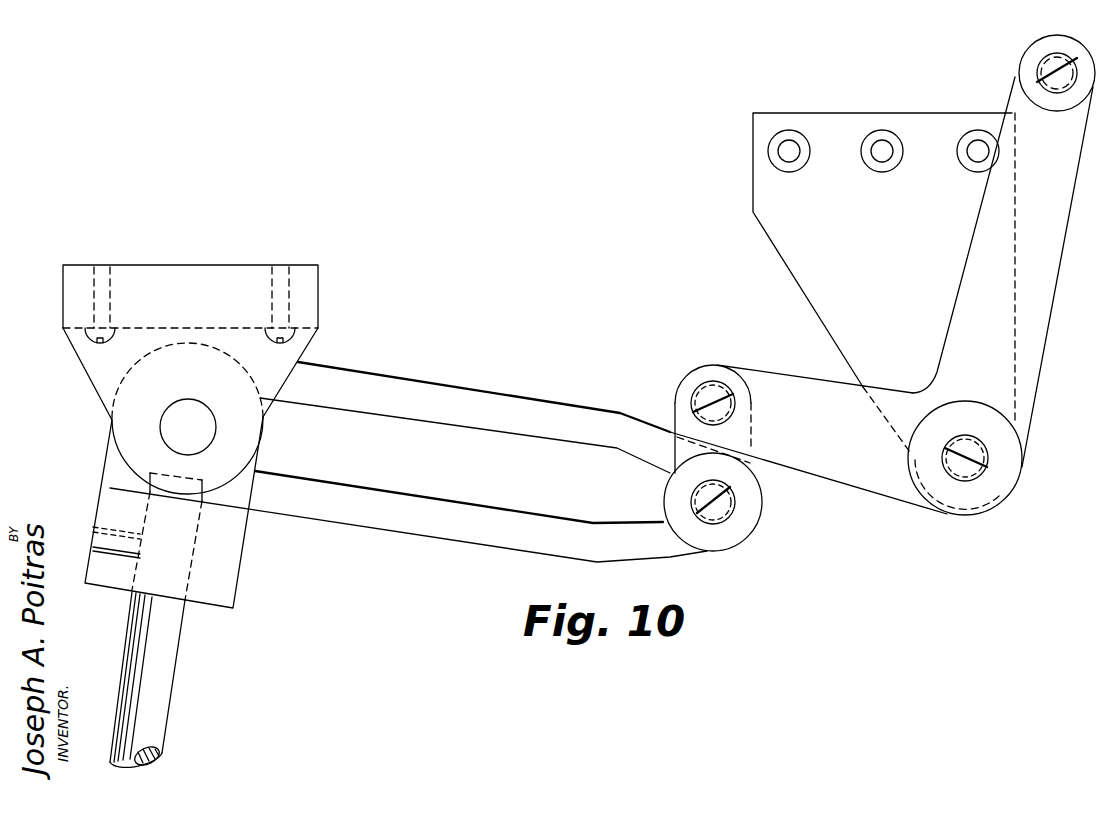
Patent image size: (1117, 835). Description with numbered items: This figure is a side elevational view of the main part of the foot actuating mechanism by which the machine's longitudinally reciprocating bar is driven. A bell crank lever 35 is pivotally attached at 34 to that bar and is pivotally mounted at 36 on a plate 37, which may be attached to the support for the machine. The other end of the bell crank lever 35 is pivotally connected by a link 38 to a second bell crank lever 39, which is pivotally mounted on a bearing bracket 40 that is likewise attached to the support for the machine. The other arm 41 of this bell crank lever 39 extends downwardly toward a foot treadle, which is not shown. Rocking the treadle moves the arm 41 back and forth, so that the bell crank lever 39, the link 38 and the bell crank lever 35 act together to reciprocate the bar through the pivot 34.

The pivotal attachment 34 is at (1040, 62).
The bell crank lever 35 is at (973, 255).
The pivotal mounting 36 is at (968, 473).
The plate 37 is at (800, 262).
The link 38 is at (737, 482).
The bell crank lever 39 is at (298, 505).
The bearing bracket 40 is at (297, 338).
The arm 41 is at (153, 732).